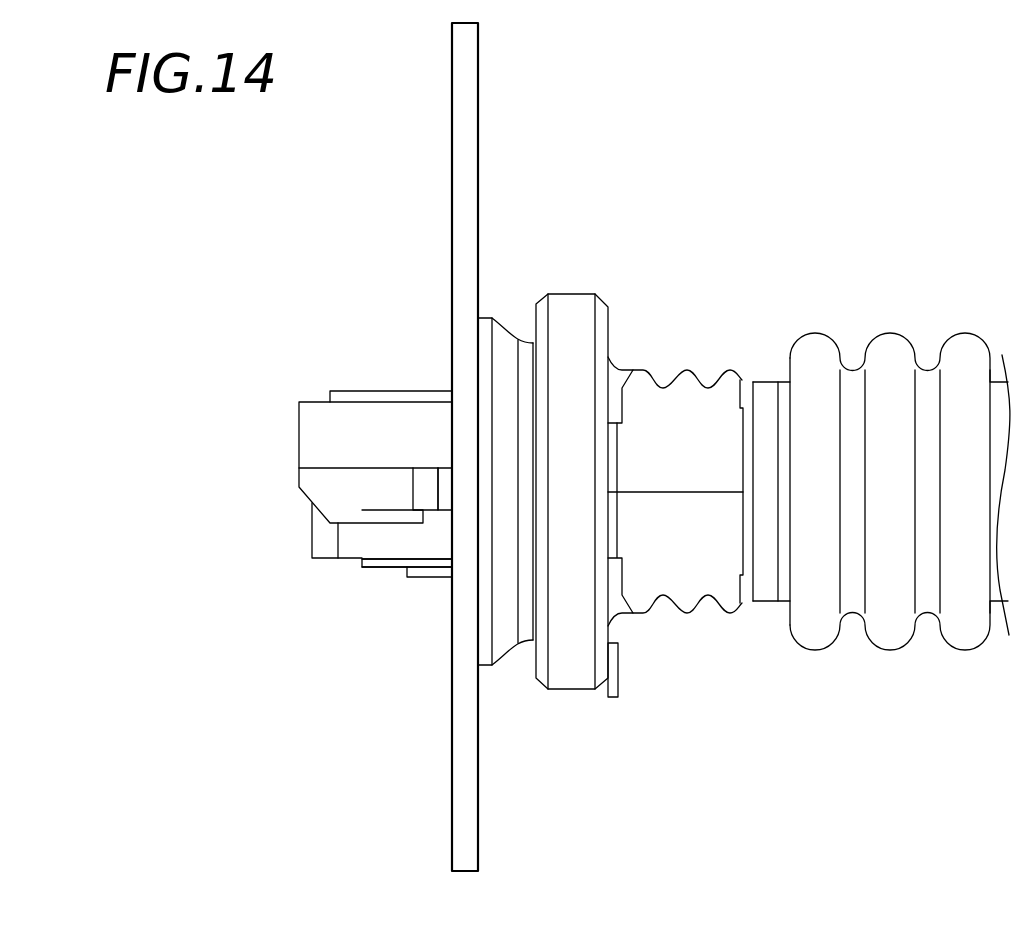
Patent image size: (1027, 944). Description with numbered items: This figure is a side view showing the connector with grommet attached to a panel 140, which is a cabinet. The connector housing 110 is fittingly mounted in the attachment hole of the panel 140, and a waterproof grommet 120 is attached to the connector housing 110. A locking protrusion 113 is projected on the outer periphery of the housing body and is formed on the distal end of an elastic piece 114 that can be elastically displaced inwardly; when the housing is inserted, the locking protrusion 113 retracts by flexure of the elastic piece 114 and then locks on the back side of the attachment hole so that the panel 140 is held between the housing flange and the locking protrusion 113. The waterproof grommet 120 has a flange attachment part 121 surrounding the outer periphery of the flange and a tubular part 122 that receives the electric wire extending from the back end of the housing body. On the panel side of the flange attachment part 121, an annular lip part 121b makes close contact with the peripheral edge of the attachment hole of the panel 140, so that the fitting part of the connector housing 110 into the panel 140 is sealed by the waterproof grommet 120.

The connector housing 110 is at (375, 392).
The locking protrusion 113 is at (441, 490).
The elastic piece 114 is at (384, 502).
The waterproof grommet 120 is at (820, 130).
The flange attachment part 121 is at (575, 293).
The lip part 121b is at (503, 330).
The tubular part 122 is at (815, 342).
The panel 140 is at (475, 95).